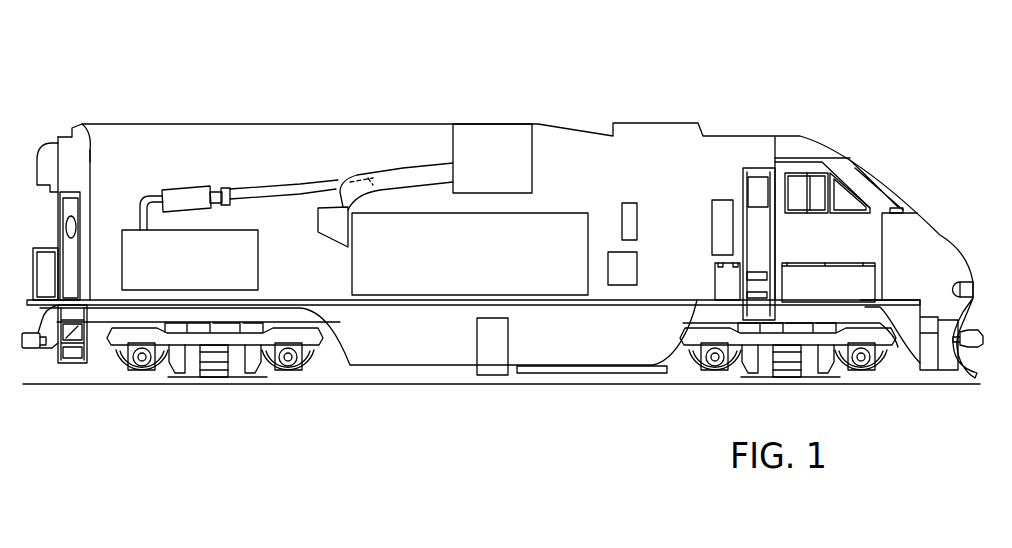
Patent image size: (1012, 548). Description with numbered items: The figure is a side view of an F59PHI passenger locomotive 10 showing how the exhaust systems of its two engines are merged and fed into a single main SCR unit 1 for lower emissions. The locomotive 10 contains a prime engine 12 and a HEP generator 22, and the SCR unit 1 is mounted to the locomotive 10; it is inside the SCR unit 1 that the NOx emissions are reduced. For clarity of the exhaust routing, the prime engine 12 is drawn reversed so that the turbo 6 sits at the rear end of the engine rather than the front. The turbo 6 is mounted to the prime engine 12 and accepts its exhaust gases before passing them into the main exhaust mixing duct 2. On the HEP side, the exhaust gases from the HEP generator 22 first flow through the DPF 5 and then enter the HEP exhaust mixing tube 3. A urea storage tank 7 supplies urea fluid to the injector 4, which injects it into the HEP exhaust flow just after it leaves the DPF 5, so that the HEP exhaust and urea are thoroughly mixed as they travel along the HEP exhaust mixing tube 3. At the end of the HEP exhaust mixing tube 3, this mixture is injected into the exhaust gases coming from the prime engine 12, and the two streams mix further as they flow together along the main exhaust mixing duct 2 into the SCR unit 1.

The F59PHI locomotive 10 is at (327, 110).
The SCR unit 1 is at (497, 147).
The main exhaust mixing duct 2 is at (407, 168).
The HEP exhaust mixing tube 3 is at (306, 186).
The injector 4 is at (227, 189).
The DPF 5 is at (185, 192).
The turbo 6 is at (337, 227).
The urea storage tank 7 is at (495, 342).
The prime engine 12 is at (393, 258).
The HEP generator 22 is at (183, 273).